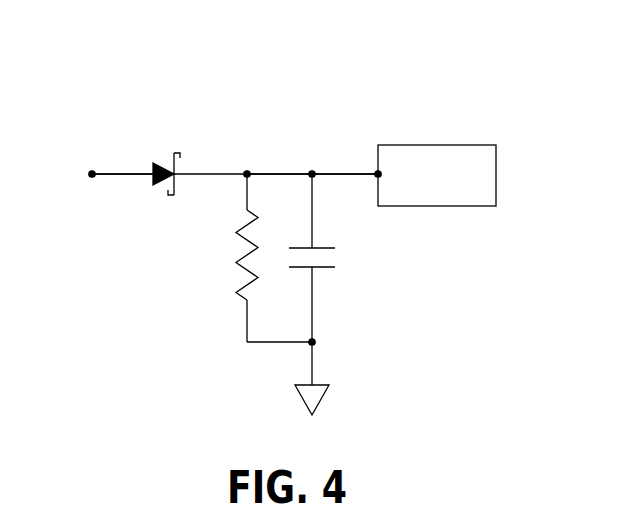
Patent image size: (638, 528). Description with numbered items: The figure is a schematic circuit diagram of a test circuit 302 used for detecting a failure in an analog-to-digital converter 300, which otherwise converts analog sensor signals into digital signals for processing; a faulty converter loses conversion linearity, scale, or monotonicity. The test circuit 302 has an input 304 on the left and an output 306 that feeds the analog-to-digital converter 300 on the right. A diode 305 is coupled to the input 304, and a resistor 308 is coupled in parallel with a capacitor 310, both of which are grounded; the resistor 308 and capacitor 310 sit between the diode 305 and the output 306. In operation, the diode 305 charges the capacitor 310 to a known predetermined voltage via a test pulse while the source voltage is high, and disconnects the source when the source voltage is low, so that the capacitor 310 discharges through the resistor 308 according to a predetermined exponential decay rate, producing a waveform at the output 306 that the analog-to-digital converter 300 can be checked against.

The analog-to-digital converter 300 is at (478, 145).
The test circuit 302 is at (380, 66).
The input 304 is at (118, 172).
The diode 305 is at (161, 186).
The output 306 is at (347, 172).
The resistor 308 is at (233, 264).
The capacitor 310 is at (320, 270).